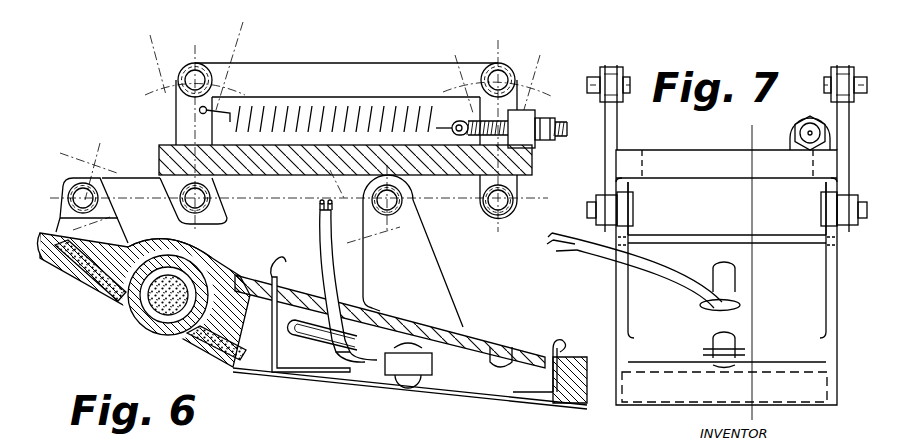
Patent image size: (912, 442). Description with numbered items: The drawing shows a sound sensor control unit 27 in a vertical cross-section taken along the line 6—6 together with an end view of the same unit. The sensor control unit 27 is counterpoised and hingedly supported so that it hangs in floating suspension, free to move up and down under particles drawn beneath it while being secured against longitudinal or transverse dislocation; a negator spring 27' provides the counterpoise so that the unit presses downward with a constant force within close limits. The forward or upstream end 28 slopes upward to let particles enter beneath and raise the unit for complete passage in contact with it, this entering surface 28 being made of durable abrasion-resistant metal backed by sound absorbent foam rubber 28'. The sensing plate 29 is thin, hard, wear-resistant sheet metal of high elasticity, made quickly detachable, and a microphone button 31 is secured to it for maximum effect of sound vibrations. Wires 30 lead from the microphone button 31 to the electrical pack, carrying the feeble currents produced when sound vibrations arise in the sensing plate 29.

In FIG. 7, the section line 6 is at (768, 141).
In FIG. 6, the sensor control unit 27 is at (286, 228).
In FIG. 7, the sensor control unit 27 is at (689, 235).
In FIG. 6, the negator spring 27' is at (363, 106).
In FIG. 6, the forward end 28 is at (312, 318).
In FIG. 6, the foam rubber 28' is at (154, 297).
In FIG. 6, the sensing plate 29 is at (330, 380).
In FIG. 7, the sensing plate 29 is at (648, 372).
In FIG. 6, the wires 30 is at (316, 214).
In FIG. 7, the wires 30 is at (557, 248).
In FIG. 6, the microphone button 31 is at (433, 366).